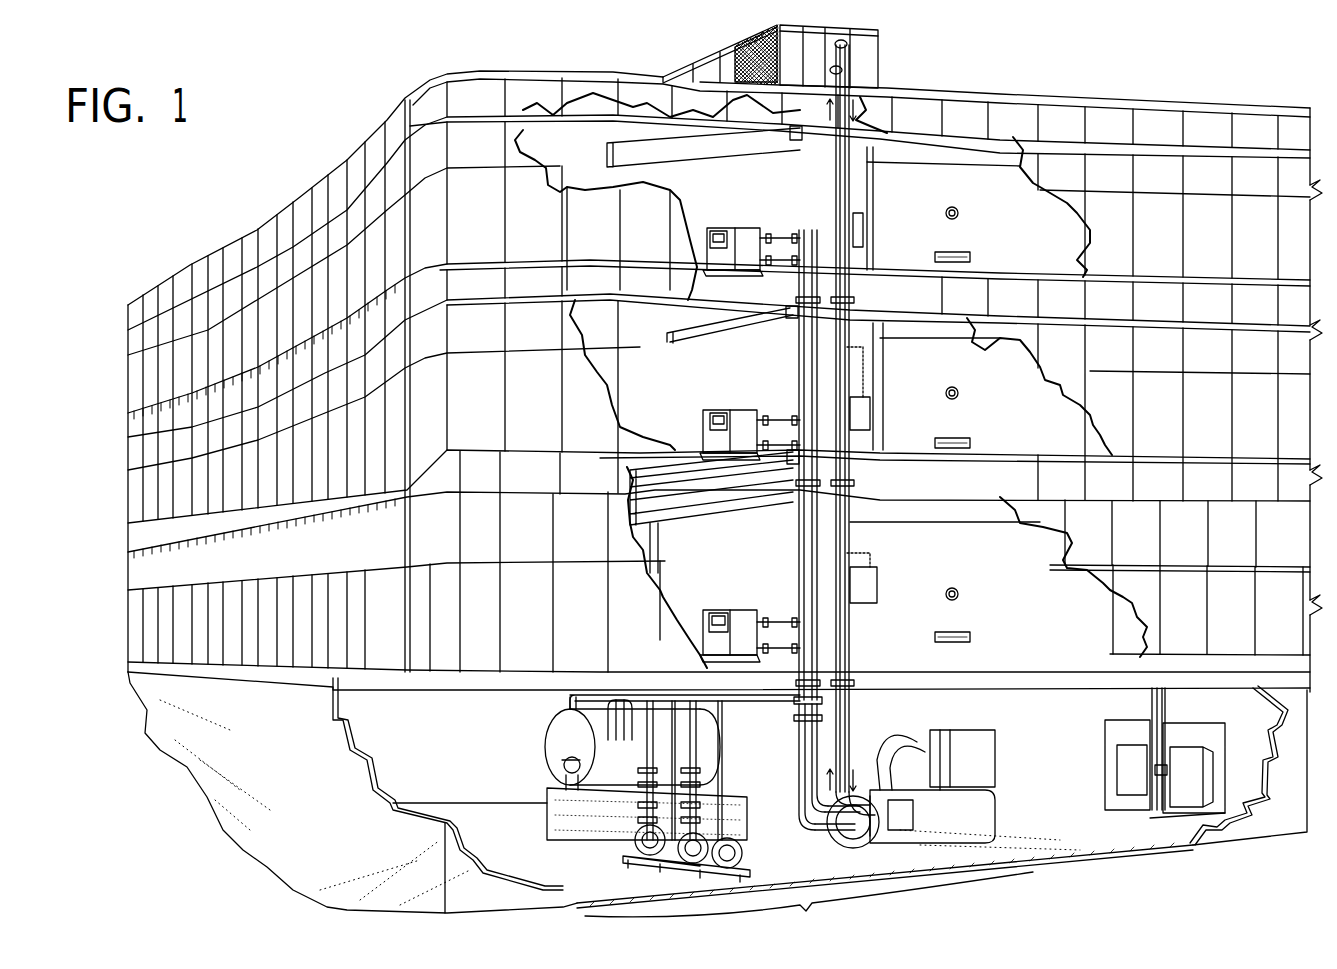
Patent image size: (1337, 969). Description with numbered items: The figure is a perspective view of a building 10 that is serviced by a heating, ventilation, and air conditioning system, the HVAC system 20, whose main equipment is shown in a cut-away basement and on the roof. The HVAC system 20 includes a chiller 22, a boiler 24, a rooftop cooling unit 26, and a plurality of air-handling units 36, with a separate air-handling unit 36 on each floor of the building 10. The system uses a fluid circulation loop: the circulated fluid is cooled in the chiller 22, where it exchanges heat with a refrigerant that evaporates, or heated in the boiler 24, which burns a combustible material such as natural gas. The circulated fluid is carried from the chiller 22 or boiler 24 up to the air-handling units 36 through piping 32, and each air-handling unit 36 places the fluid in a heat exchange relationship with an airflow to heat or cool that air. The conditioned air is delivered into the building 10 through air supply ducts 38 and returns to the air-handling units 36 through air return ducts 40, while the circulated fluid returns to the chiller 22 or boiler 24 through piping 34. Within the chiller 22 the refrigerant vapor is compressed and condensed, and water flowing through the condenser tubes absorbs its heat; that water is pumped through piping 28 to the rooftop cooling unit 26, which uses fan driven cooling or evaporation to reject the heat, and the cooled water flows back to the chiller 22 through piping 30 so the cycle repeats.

The building 10 is at (288, 130).
The HVAC system 20 is at (809, 903).
The chiller 22 is at (928, 818).
The boiler 24 is at (557, 745).
The rooftop cooling unit 26 is at (872, 76).
The piping 28 is at (820, 77).
The piping 30 is at (851, 52).
The piping 32 is at (808, 826).
The piping 34 is at (816, 745).
The air-handling unit 36 is at (750, 226).
The air supply duct 38 is at (800, 152).
The air return duct 40 is at (705, 262).